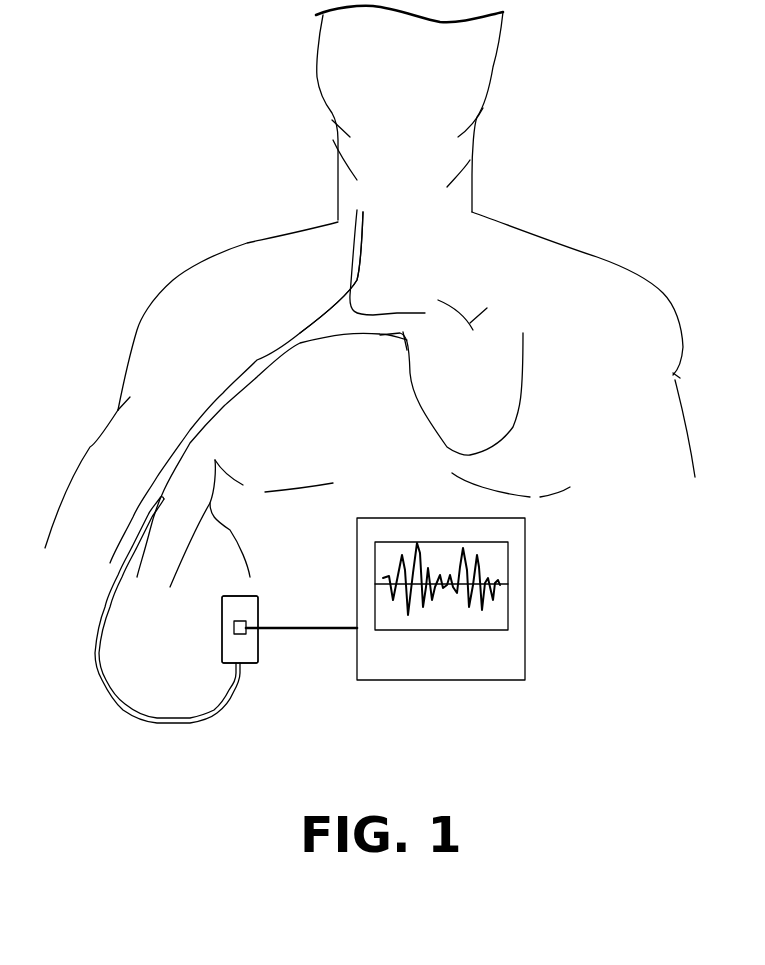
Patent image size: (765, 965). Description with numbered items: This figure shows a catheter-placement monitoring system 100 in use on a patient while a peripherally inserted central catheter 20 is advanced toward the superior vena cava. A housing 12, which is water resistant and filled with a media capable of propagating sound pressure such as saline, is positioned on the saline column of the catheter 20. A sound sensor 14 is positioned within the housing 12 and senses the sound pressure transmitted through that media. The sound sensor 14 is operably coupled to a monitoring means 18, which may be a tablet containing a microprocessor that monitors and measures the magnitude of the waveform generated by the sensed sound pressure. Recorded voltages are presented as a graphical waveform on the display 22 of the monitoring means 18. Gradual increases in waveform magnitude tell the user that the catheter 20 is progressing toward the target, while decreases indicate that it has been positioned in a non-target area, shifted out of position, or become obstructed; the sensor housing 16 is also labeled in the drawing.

The monitoring system 100 is at (570, 557).
The housing 12 is at (260, 648).
The sound sensor 14 is at (234, 625).
The sensor housing 16 is at (247, 606).
The monitoring means 18 is at (527, 652).
The catheter 20 is at (130, 713).
The display 22 is at (440, 617).